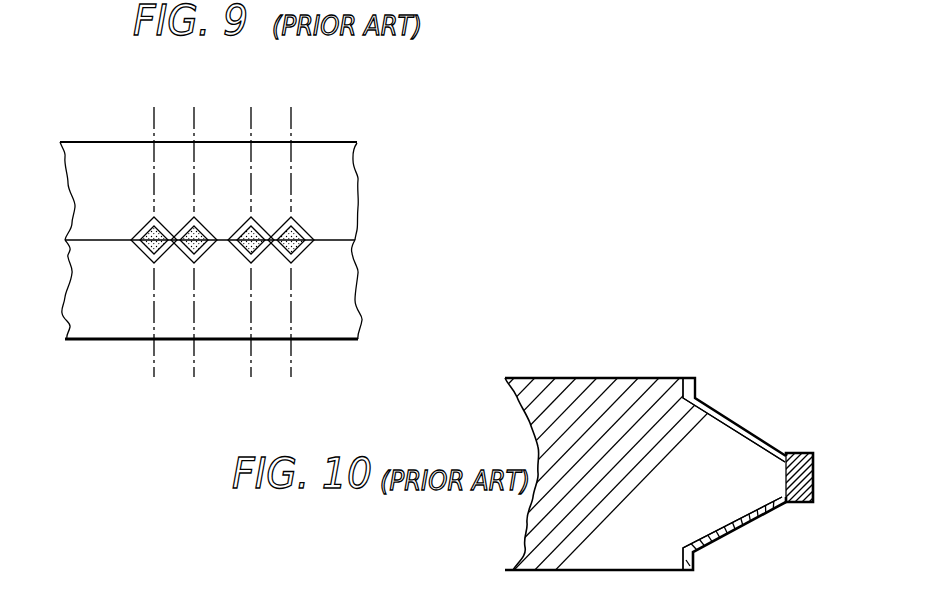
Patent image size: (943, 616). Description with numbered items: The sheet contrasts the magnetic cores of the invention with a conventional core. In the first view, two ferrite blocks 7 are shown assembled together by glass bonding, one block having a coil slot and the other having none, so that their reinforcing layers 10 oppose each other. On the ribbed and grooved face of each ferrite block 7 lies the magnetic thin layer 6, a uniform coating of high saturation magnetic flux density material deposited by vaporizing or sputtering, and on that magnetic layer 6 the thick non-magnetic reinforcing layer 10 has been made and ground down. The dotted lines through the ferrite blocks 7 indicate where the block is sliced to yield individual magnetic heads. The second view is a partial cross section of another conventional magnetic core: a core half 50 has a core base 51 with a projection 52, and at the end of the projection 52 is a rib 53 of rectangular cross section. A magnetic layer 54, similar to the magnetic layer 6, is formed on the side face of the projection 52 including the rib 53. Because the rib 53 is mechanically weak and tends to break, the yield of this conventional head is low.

In FIG. 9, the ferrite block 7 is at (118, 155).
In FIG. 9, the magnetic thin layer 6 is at (145, 257).
In FIG. 9, the reinforcing layer 10 is at (200, 245).
In FIG. 10, the core half 50 is at (492, 440).
In FIG. 10, the core base 51 is at (612, 378).
In FIG. 10, the projection 52 is at (767, 473).
In FIG. 10, the rib 53 is at (793, 472).
In FIG. 10, the magnetic layer 54 is at (688, 378).